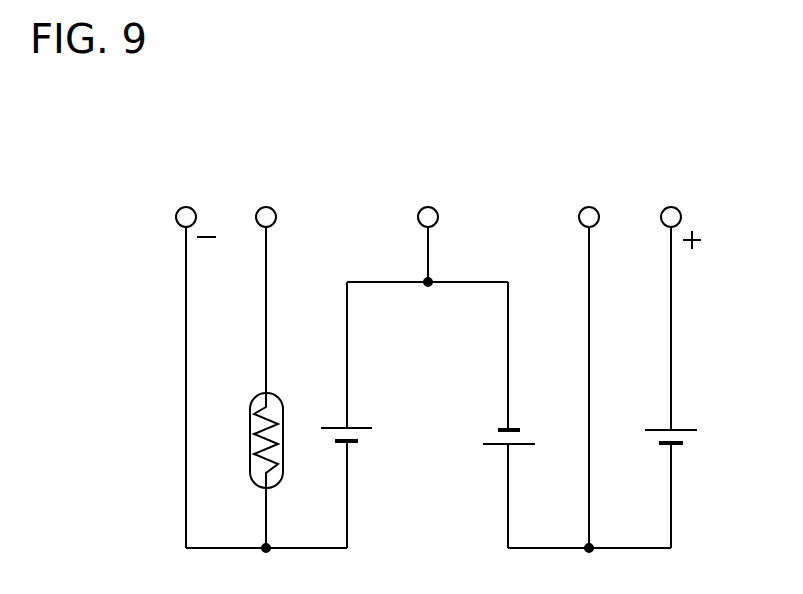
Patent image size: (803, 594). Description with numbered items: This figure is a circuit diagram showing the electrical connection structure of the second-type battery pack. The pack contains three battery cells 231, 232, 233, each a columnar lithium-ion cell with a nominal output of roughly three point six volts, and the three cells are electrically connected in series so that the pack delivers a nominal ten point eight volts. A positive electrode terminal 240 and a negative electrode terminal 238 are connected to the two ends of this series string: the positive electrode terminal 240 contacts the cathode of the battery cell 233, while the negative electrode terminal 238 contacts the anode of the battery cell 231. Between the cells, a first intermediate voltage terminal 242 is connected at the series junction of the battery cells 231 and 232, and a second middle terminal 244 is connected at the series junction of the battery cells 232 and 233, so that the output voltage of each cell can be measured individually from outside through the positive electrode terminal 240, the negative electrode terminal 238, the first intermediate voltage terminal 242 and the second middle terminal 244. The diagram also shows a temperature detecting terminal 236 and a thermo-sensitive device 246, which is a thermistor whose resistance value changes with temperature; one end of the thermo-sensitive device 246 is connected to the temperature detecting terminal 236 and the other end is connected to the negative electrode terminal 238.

The negative electrode terminal 238 is at (186, 206).
The temperature detecting terminal 236 is at (266, 206).
The first intermediate voltage terminal 242 is at (428, 206).
The second middle terminal 244 is at (589, 206).
The positive electrode terminal 240 is at (671, 206).
The battery cell 231 is at (358, 428).
The battery cell 232 is at (494, 444).
The battery cell 233 is at (684, 430).
The thermo-sensitive device 246 is at (250, 436).